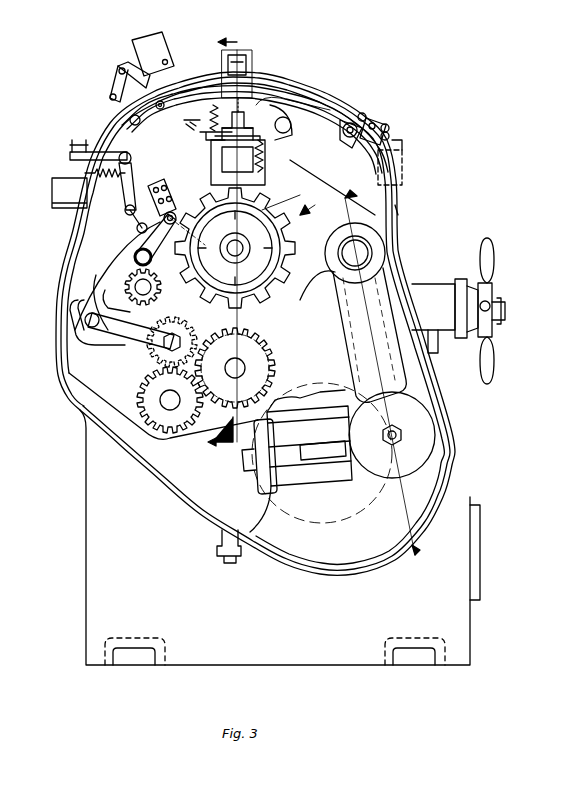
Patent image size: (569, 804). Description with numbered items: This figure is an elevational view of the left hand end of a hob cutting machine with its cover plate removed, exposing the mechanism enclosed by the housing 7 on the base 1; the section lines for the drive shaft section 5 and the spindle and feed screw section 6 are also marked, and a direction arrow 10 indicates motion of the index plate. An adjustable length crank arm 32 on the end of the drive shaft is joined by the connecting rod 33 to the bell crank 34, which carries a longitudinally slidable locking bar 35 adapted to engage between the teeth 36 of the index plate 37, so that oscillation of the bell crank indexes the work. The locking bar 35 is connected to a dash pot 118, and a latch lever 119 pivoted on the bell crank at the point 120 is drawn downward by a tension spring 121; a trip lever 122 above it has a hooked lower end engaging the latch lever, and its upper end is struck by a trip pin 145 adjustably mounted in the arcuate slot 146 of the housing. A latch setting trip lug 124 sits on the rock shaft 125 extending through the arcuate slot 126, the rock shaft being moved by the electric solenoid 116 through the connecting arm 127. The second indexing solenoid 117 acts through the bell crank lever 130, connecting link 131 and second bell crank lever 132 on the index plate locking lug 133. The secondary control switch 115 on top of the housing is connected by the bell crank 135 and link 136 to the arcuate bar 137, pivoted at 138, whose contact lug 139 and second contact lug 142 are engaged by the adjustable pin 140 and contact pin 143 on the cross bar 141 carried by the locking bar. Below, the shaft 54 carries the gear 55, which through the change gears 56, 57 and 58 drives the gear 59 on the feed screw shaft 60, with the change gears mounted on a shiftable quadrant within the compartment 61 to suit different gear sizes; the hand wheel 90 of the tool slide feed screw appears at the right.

The base 1 is at (458, 480).
The tool slide 5 is at (348, 198).
The drive motor 6 is at (220, 248).
The housing 7 is at (275, 88).
The direction arrow 10 is at (308, 221).
The crank arm 32 is at (350, 470).
The connecting rod 33 is at (392, 282).
The bell crank 34 is at (345, 213).
The locking bar 35 is at (258, 192).
The teeth 36 is at (300, 195).
The index plate 37 is at (290, 280).
The shaft 54 is at (110, 282).
The gear 55 is at (130, 283).
The change gear 56 is at (130, 358).
The change gear 57 is at (150, 364).
The change gear 58 is at (175, 418).
The gear 59 is at (265, 340).
The feed screw shaft 60 is at (246, 368).
The gear compartment 61 is at (92, 256).
The hand wheel 90 is at (484, 337).
The secondary control switch 115 is at (133, 40).
The electric solenoid 116 is at (402, 156).
The electric solenoid 117 is at (54, 190).
The dash pot 118 is at (222, 158).
The latch lever 119 is at (268, 148).
The pivot point 120 is at (292, 128).
The tension spring 121 is at (264, 160).
The trip lever 122 is at (258, 94).
The latch setting trip lug 124 is at (378, 130).
The rock shaft 125 is at (374, 124).
The arcuate slot 126 is at (345, 120).
The connecting arm 127 is at (387, 136).
The bell crank lever 130 is at (124, 153).
The connecting link 131 is at (120, 190).
The second bell crank lever 132 is at (171, 210).
The index plate locking lug 133 is at (142, 250).
The bell crank 135 is at (118, 70).
The link 136 is at (112, 98).
The arcuate bar 137 is at (305, 110).
The pivot 138 is at (246, 90).
The contact lug 139 is at (363, 114).
The adjustable pin 140 is at (278, 112).
The cross bar 141 is at (210, 131).
The second contact lug 142 is at (160, 108).
The contact pin 143 is at (188, 125).
The trip pin 145 is at (214, 106).
The arcuate slot 146 is at (150, 118).